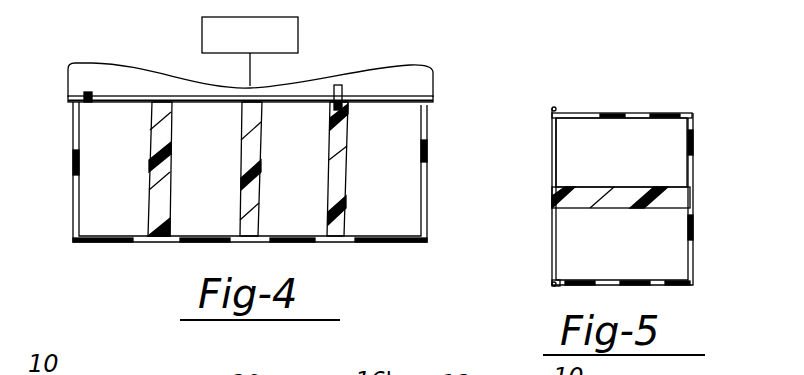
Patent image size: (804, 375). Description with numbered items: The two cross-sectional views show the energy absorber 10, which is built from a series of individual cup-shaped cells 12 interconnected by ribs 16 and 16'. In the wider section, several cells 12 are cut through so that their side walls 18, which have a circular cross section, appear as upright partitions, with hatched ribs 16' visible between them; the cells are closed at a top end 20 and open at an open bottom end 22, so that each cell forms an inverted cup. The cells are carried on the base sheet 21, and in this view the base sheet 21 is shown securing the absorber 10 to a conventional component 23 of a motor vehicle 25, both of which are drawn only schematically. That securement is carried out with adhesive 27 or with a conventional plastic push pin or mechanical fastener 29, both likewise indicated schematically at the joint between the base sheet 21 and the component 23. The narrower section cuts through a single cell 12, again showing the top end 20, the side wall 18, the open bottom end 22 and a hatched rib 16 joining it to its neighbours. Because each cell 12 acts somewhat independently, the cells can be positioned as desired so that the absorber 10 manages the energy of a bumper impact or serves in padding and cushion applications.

In FIG. 4, the absorber 10 is at (58, 163).
In FIG. 5, the absorber 10 is at (712, 234).
In FIG. 5, the cup-shaped cell 12 is at (705, 124).
In FIG. 5, the rib 16 is at (668, 207).
In FIG. 4, the rib 16' is at (210, 203).
In FIG. 4, the side wall 18 is at (424, 193).
In FIG. 5, the top end 20 is at (694, 162).
In FIG. 5, the base sheet 21 is at (552, 285).
In FIG. 5, the open bottom end 22 is at (538, 148).
In FIG. 4, the conventional component 23 is at (423, 82).
In FIG. 4, the motor vehicle 25 is at (266, 48).
In FIG. 4, the adhesive 27 is at (88, 95).
In FIG. 4, the push pin/mechanical fastener 29 is at (343, 92).